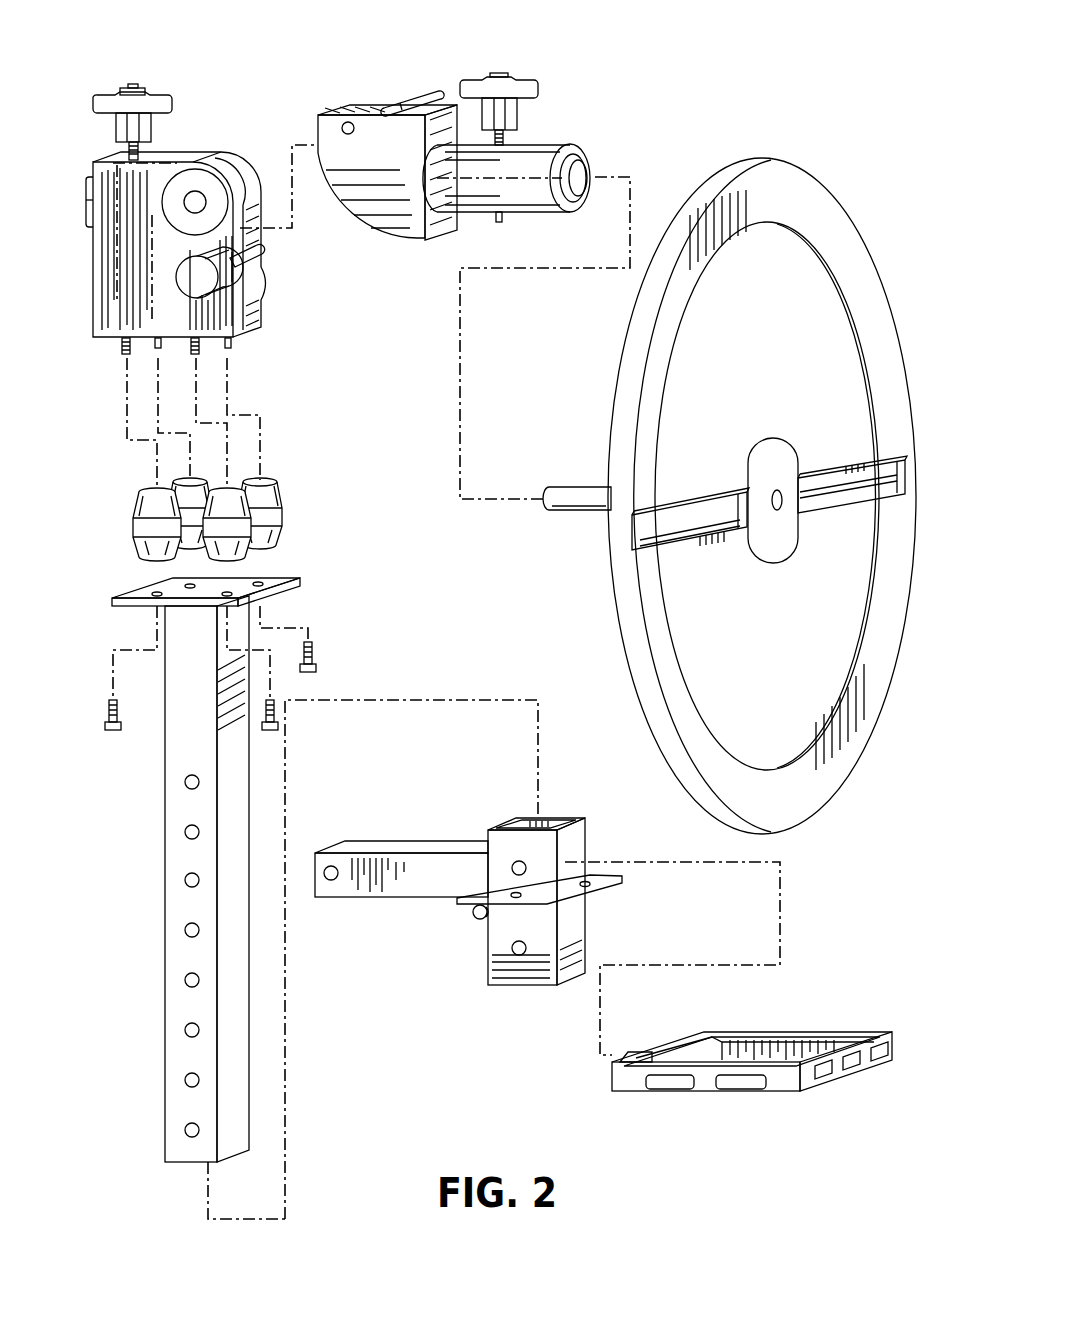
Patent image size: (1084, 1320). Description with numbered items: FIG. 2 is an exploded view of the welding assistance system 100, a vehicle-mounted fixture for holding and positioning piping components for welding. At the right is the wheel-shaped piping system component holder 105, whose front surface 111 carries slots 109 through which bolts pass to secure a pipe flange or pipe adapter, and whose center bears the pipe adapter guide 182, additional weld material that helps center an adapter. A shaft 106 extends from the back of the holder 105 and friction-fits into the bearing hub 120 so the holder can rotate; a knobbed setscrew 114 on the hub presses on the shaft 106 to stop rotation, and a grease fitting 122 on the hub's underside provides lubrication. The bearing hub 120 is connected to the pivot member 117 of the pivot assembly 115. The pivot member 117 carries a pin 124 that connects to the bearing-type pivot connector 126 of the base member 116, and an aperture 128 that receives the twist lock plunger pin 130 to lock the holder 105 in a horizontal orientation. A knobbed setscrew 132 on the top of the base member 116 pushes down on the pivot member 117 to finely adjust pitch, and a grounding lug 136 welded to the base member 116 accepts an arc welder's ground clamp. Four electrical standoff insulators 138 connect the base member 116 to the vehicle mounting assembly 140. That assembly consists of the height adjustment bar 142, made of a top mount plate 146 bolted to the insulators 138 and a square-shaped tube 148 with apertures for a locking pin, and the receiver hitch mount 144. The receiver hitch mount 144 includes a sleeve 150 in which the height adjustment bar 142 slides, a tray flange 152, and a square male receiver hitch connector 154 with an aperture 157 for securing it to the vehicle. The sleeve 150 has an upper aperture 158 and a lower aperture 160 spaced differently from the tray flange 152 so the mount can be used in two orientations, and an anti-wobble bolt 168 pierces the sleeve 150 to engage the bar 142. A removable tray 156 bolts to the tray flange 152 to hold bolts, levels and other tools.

The welding assistance system 100 is at (832, 114).
The piping system component holder 105 is at (765, 496).
The shaft 106 is at (556, 487).
The slots 109 is at (826, 498).
The front surface 111 is at (835, 208).
The knobbed setscrew 114 is at (512, 88).
The pivot assembly 115 is at (357, 208).
The base member 116 is at (184, 209).
The pivot member 117 is at (477, 167).
The bearing hub 120 is at (589, 166).
The grease fitting 122 is at (499, 225).
The pin 124 is at (406, 103).
The pivot connector 126 is at (198, 196).
The aperture 128 is at (347, 122).
The twist lock plunger pin 130 is at (224, 272).
The knobbed setscrew 132 is at (123, 94).
The grounding lug 136 is at (90, 196).
The electrical standoff insulators 138 is at (286, 496).
The vehicle mounting assembly 140 is at (381, 836).
The height adjustment bar 142 is at (161, 879).
The receiver hitch mount 144 is at (548, 899).
The top mount plate 146 is at (286, 584).
The square-shaped tube 148 is at (163, 756).
The sleeve 150 is at (508, 830).
The tray flange 152 is at (618, 880).
The male receiver hitch connector 154 is at (401, 903).
The tray 156 is at (870, 1036).
The aperture 157 is at (334, 879).
The aperture 158 is at (514, 864).
The aperture 160 is at (522, 956).
The bolt 168 is at (480, 920).
The pipe adapter guide 182 is at (770, 485).